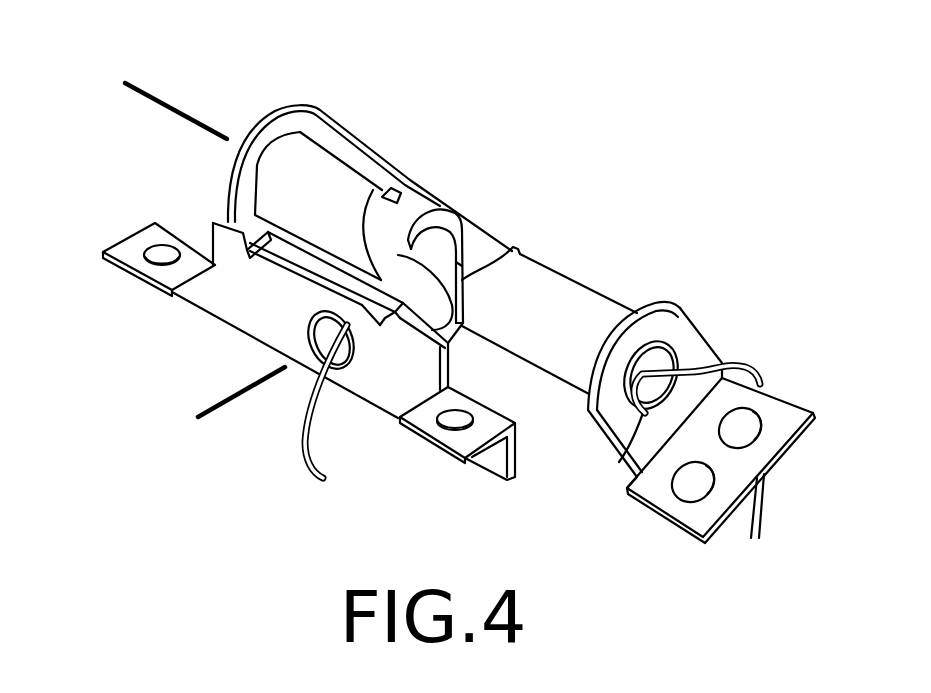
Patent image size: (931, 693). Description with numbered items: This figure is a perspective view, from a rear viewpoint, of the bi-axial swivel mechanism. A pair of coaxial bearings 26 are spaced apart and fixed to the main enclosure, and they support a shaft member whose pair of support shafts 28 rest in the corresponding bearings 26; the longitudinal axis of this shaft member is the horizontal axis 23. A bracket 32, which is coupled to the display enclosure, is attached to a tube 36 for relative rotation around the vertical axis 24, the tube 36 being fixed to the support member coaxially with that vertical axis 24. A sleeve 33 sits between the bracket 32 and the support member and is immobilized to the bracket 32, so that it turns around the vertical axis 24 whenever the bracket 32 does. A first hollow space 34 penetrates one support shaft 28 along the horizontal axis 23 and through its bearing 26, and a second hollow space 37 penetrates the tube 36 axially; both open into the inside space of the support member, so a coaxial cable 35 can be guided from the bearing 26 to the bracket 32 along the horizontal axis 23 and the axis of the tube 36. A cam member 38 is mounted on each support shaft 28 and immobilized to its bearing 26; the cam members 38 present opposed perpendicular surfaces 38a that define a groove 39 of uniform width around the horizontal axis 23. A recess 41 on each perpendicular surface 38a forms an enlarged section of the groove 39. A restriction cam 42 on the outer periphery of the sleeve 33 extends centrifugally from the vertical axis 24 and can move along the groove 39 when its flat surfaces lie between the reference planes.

The horizontal axis 23 is at (141, 87).
The vertical axis 24 is at (227, 400).
The bearing 26 is at (297, 105).
The support shaft 28 is at (663, 340).
The bracket 32 is at (118, 245).
The sleeve 33 is at (438, 302).
The first hollow space 34 is at (625, 455).
The coaxial cable 35 is at (748, 365).
The tube 36 is at (312, 323).
The second hollow space 37 is at (355, 365).
The cam member 38 is at (407, 197).
The perpendicular surface 38a is at (453, 322).
The groove 39 is at (452, 285).
The recess 41 is at (431, 208).
The restriction cam 42 is at (405, 239).